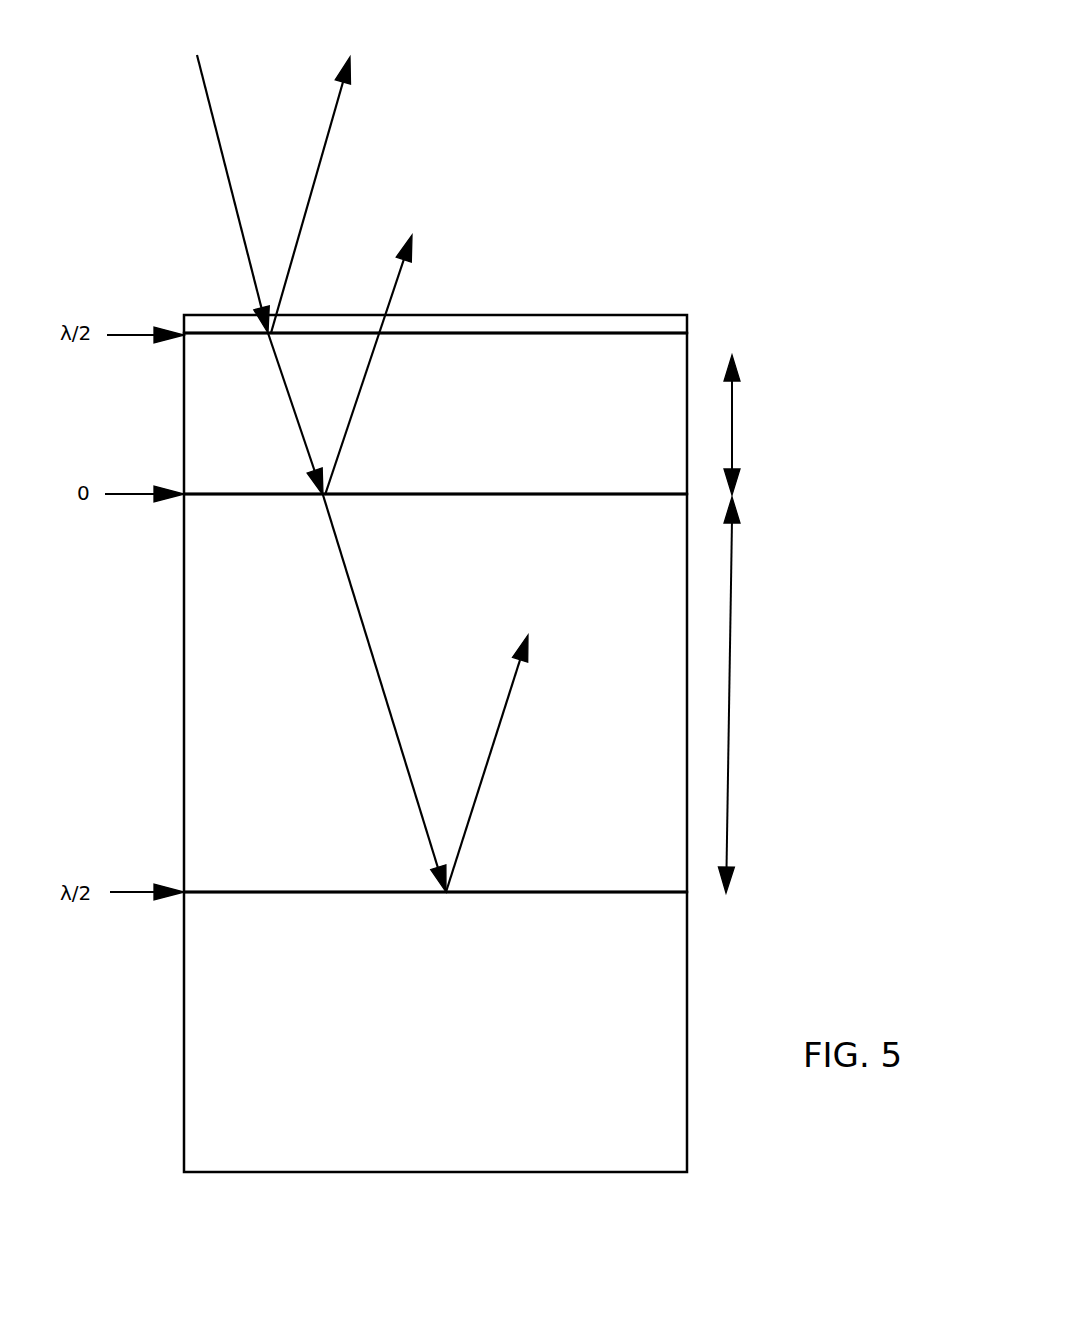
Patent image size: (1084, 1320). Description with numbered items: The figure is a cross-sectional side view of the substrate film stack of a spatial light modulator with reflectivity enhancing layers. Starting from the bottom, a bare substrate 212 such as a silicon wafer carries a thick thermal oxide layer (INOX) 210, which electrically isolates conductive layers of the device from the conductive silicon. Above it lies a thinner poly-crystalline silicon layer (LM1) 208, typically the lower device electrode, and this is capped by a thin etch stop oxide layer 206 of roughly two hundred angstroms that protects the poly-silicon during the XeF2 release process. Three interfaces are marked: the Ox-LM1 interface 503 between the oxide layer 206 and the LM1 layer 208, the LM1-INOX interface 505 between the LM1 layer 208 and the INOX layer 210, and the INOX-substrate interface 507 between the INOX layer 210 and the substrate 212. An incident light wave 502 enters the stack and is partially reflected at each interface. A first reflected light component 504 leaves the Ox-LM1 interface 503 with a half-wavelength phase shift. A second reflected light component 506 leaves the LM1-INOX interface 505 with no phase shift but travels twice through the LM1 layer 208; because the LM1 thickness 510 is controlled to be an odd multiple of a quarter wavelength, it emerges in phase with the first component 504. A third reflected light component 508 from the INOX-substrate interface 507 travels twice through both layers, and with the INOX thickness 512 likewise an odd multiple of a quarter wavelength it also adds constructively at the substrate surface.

The etch stop oxide layer 206 is at (648, 329).
The poly-crystalline silicon layer (LM1) 208 is at (435, 413).
The thermal oxide layer (INOX) 210 is at (435, 693).
The substrate 212 is at (435, 1032).
The incident light wave 502 is at (300, 451).
The Ox-LM1 interface 503 is at (250, 334).
The first reflected light component 504 is at (329, 176).
The LM1-INOX interface 505 is at (250, 495).
The second reflected light component 506 is at (387, 353).
The INOX-substrate interface 507 is at (248, 893).
The third reflected light component 508 is at (499, 750).
The LM1 thickness 510 is at (835, 425).
The INOX thickness 512 is at (827, 695).